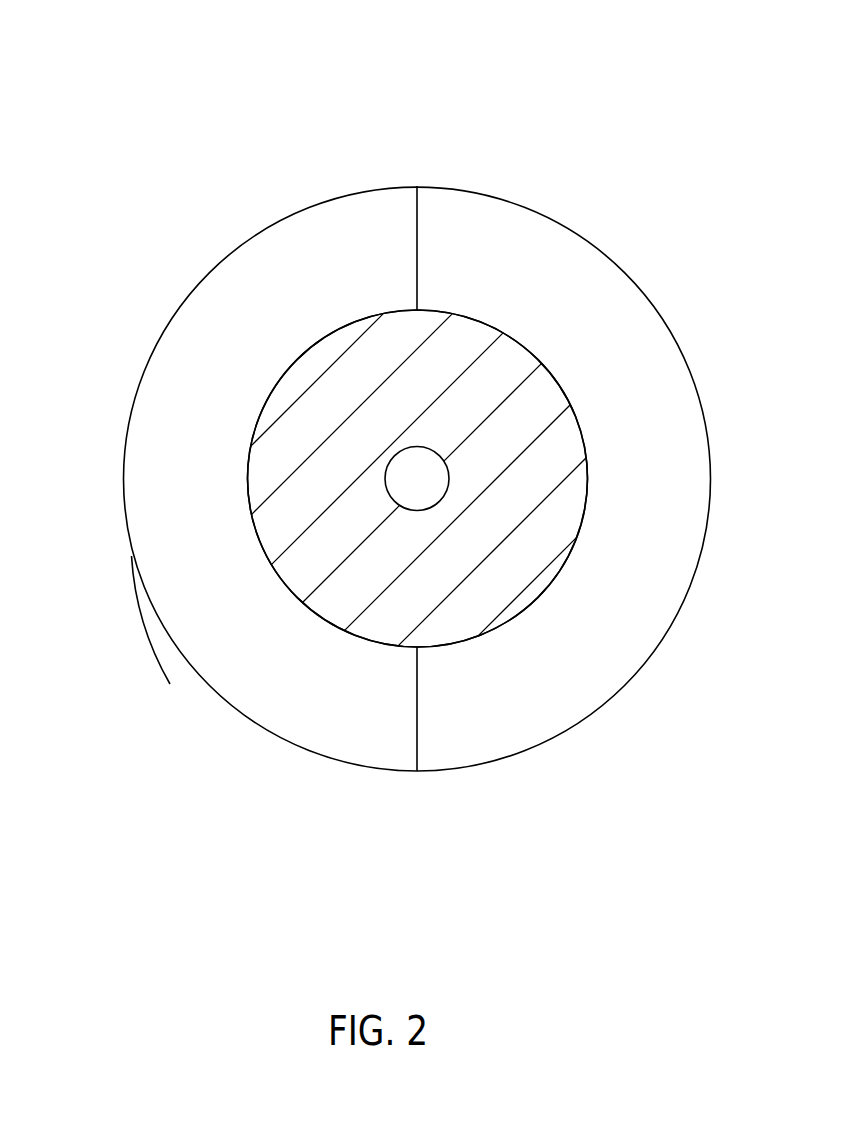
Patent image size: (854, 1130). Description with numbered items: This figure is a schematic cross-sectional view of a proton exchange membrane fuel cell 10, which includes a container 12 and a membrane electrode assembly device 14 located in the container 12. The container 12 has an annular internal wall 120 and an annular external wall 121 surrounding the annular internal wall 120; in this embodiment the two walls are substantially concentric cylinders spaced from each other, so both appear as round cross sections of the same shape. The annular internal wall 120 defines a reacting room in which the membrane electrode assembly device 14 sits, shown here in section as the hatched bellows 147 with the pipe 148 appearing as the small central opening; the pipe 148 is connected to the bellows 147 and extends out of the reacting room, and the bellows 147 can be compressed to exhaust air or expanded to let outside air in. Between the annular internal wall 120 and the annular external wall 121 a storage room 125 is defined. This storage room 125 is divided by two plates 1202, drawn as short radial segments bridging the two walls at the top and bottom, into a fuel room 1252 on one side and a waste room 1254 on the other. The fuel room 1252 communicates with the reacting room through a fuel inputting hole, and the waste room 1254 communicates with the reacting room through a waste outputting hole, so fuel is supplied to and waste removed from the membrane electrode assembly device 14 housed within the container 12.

The proton exchange membrane fuel cell 10 is at (402, 70).
The container 12 is at (210, 270).
The plates 1202 is at (413, 230).
The membrane electrode assembly device 14 is at (743, 247).
The bellows 147 is at (445, 367).
The pipe 148 is at (418, 477).
The annular external wall 121 is at (157, 617).
The annular internal wall 120 is at (313, 610).
The storage room 125 is at (646, 828).
The fuel room 1252 is at (313, 705).
The waste room 1254 is at (576, 680).